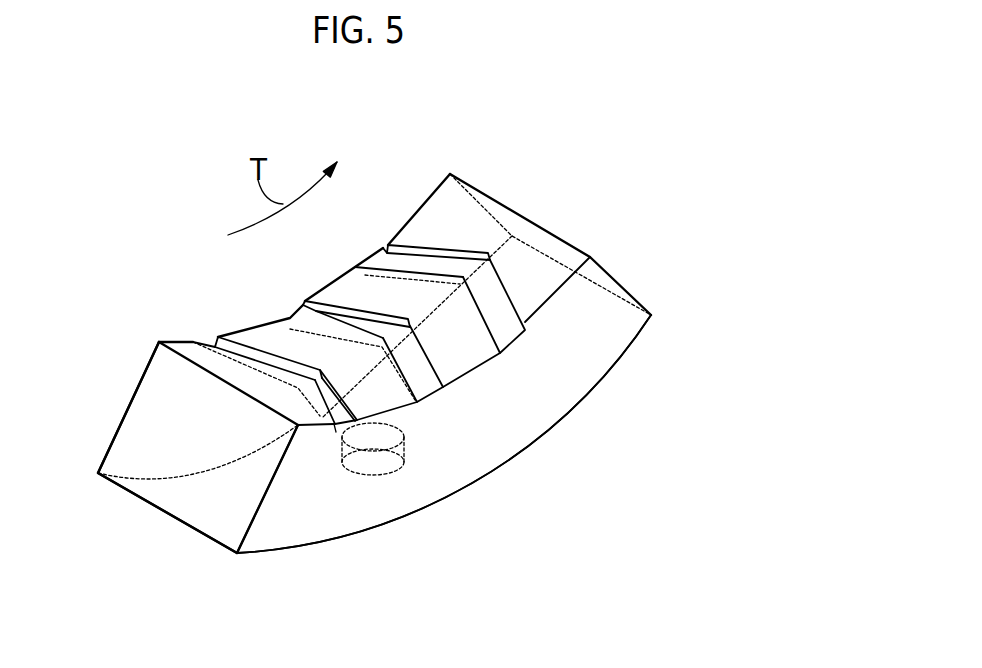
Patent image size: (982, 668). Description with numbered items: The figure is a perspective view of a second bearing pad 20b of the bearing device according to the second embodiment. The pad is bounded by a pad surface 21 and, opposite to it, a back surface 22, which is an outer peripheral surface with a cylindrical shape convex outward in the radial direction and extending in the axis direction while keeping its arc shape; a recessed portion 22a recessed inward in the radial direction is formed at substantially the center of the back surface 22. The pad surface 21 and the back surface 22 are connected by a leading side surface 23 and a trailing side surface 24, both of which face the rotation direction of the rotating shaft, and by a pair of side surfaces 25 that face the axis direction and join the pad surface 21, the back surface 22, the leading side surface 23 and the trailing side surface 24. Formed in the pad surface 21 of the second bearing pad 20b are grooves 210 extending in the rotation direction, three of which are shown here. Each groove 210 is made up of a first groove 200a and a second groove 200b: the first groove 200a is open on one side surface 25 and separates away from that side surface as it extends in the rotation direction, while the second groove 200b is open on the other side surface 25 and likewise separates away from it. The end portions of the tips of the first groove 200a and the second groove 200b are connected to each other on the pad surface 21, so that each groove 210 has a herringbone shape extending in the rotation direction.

The second bearing pad 20b is at (606, 128).
The pad surface 21 is at (445, 202).
The back surface 22 is at (317, 516).
The recessed portion 22a is at (404, 455).
The leading side surface 23 is at (183, 504).
The trailing side surface 24 is at (558, 248).
The side surfaces 25 is at (519, 421).
The groove 210 is at (212, 345).
The first groove 200a is at (340, 417).
The second groove 200b is at (248, 362).